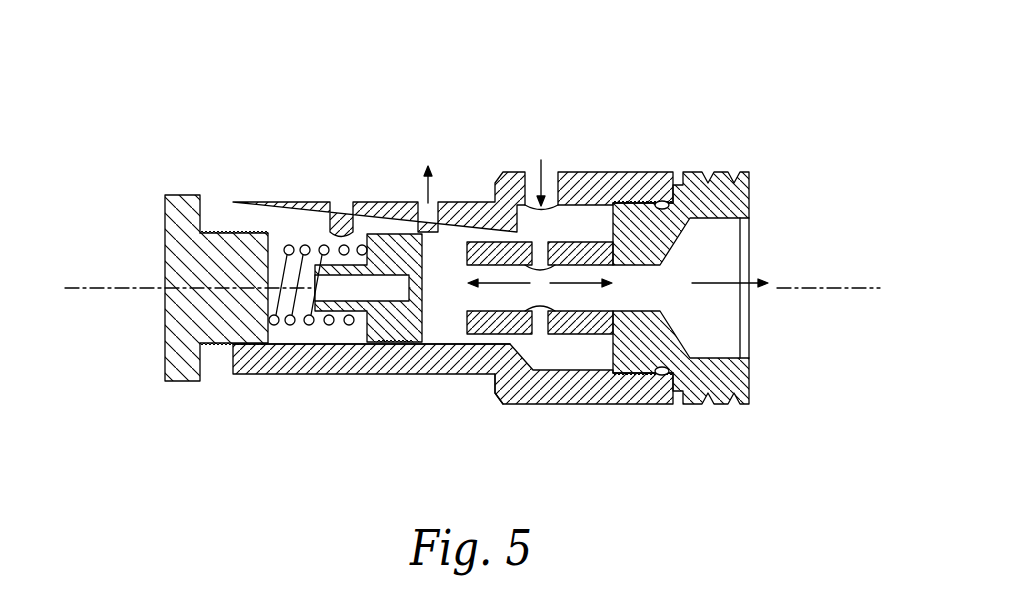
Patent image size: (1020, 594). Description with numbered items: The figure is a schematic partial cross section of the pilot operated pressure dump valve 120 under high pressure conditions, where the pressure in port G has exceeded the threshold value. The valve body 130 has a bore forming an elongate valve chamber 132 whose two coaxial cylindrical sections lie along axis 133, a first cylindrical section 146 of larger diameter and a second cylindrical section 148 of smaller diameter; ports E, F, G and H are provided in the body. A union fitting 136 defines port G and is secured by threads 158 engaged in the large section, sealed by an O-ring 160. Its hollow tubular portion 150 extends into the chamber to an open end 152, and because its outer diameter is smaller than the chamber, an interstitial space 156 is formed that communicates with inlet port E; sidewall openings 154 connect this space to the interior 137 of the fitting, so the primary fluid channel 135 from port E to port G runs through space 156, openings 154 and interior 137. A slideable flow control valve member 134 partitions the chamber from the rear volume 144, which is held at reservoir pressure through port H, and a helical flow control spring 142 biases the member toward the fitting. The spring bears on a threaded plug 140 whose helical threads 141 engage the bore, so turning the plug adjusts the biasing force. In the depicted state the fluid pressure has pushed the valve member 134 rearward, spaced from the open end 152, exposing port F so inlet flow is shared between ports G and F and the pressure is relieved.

The pilot operated pressure dump valve 120 is at (732, 124).
The valve body 130 is at (570, 398).
The valve chamber 132 is at (421, 341).
The axis 133 is at (100, 293).
The flow control valve member 134 is at (393, 344).
The primary fluid channel 135 is at (707, 307).
The union fitting 136 is at (718, 172).
The interior of union fitting 137 is at (628, 297).
The threaded plug 140 is at (183, 195).
The helical threads 141 is at (236, 375).
The flow control spring 142 is at (300, 328).
The rear volume 144 is at (283, 248).
The first cylindrical section 146 is at (553, 360).
The second cylindrical section 148 is at (324, 333).
The hollow tubular portion 150 is at (489, 398).
The open end 152 is at (466, 322).
The sidewall openings 154 is at (532, 246).
The interstitial space 156 is at (587, 222).
The threads 158 is at (658, 203).
The O-ring 160 is at (664, 203).